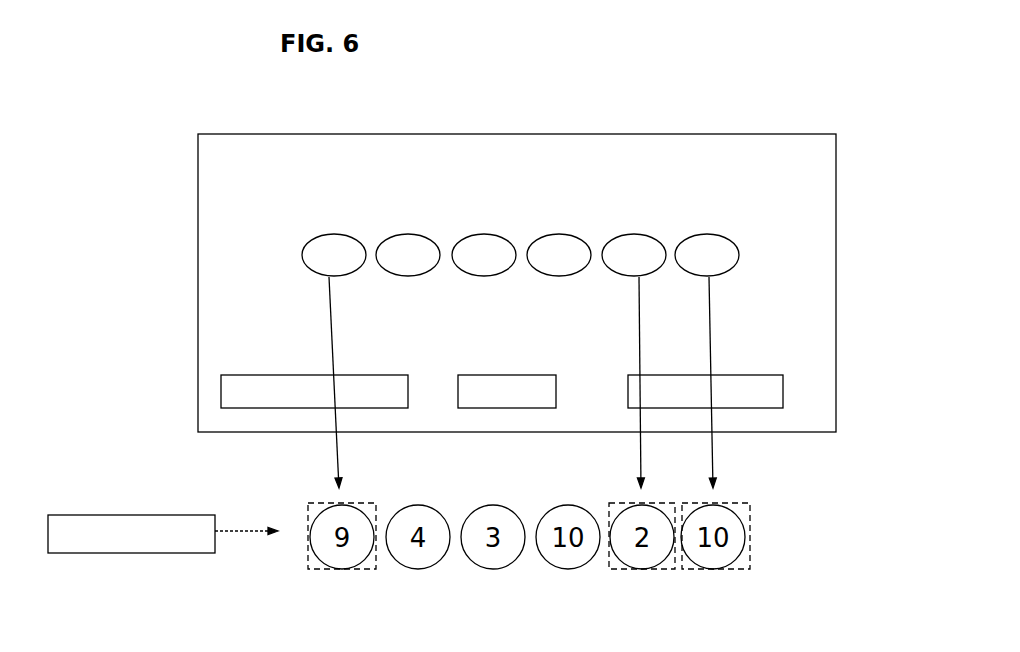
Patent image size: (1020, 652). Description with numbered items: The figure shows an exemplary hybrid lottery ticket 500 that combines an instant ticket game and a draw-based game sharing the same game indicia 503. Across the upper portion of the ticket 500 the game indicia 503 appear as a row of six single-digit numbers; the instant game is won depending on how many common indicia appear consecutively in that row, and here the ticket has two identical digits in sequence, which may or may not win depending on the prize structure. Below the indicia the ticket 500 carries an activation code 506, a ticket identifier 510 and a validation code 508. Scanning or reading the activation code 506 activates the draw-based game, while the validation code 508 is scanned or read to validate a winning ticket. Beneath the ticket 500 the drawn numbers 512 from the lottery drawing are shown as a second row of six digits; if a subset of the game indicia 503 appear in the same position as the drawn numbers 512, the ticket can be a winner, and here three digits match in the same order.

The ticket 500 is at (827, 162).
The game indicia 503 is at (375, 239).
The activation code 506 is at (222, 389).
The validation code 508 is at (790, 382).
The ticket identifier 510 is at (474, 414).
The drawn numbers 512 is at (133, 557).